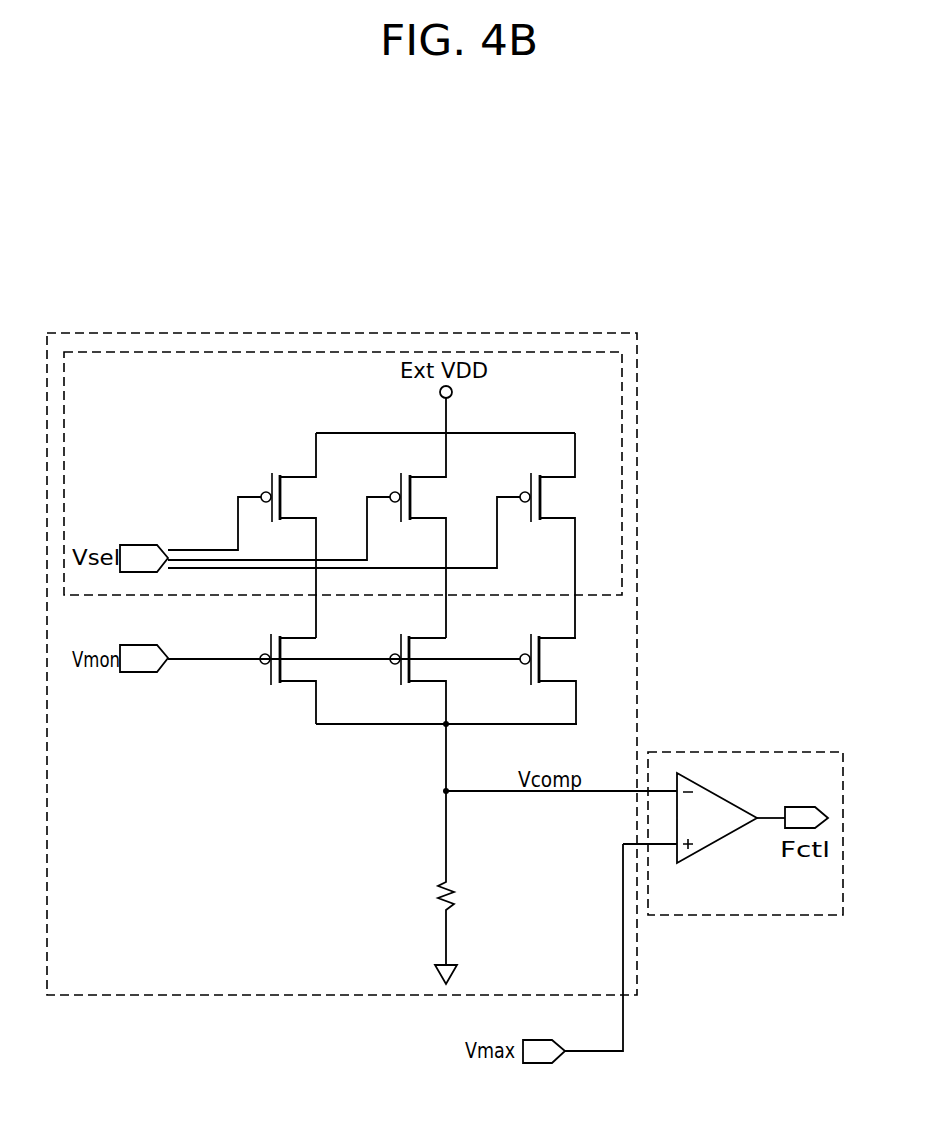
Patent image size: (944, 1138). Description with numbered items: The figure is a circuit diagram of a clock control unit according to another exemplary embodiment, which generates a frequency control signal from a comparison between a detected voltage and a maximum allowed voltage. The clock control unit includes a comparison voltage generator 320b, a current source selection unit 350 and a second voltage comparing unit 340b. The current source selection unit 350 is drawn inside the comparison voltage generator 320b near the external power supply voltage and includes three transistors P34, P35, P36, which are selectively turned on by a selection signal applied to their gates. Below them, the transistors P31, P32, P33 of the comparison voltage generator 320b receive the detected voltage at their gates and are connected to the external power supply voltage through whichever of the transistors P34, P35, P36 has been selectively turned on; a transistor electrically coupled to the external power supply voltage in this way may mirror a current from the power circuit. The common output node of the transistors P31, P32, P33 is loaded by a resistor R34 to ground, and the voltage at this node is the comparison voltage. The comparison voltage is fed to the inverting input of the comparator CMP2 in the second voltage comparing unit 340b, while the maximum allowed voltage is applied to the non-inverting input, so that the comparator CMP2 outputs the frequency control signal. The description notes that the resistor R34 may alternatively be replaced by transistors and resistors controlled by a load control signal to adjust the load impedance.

The comparison voltage generator 320b is at (288, 333).
The current source selection unit 350 is at (404, 352).
The second voltage comparing unit 340b is at (755, 752).
The transistor P31 is at (288, 666).
The transistor P32 is at (418, 701).
The transistor P33 is at (568, 679).
The transistor P34 is at (261, 535).
The transistor P35 is at (326, 535).
The transistor P36 is at (391, 535).
The resistor R34 is at (467, 887).
The comparator CMP2 is at (704, 832).